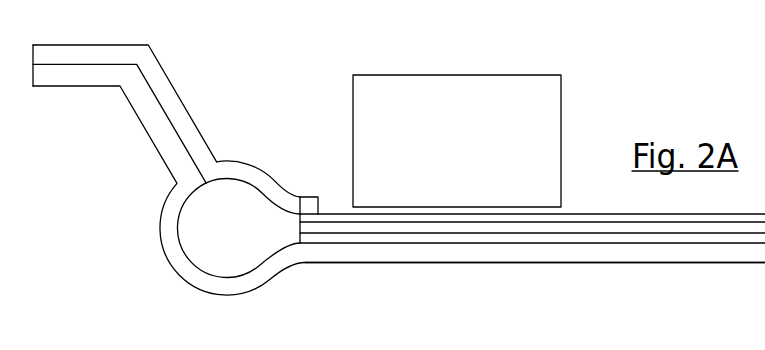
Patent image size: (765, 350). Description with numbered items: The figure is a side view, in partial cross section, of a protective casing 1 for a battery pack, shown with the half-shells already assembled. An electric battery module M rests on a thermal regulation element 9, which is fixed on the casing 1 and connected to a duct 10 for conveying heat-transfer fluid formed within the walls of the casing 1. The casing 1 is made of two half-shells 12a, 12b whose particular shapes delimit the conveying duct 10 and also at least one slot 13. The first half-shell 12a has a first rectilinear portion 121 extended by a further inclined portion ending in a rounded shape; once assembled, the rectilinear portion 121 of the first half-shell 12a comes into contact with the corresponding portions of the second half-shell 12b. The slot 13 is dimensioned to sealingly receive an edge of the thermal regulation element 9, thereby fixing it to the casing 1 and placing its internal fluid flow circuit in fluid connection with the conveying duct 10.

The protective casing 1 is at (137, 211).
The first half-shell 12a is at (177, 113).
The second half-shell 12b is at (77, 78).
The duct 10 is at (258, 233).
The slot 13 is at (300, 235).
The thermal regulation element 9 is at (423, 229).
The first rectilinear portion 121 is at (533, 349).
The electric battery module M is at (533, 110).